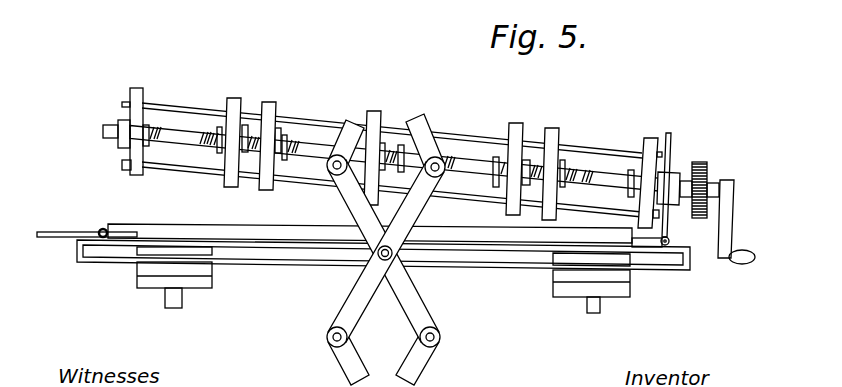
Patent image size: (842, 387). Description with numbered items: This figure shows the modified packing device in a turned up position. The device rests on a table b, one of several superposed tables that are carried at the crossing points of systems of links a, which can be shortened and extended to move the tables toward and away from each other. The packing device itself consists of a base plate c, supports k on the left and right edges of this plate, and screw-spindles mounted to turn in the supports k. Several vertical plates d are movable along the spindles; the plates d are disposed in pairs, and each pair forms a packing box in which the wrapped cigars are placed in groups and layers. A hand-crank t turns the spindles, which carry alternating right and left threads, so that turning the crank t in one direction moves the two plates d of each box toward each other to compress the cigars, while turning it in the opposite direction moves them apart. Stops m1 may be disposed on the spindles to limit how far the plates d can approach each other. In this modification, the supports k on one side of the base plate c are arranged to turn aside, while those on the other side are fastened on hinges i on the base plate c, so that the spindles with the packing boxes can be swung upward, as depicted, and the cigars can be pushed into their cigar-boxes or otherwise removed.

The stop m1 is at (150, 122).
The vertical plate d is at (238, 101).
The system of links a is at (420, 133).
The shaft l is at (578, 178).
The support k is at (670, 141).
The hand-crank t is at (730, 225).
The hinge i is at (672, 232).
The base plate c is at (532, 240).
The table b is at (290, 252).